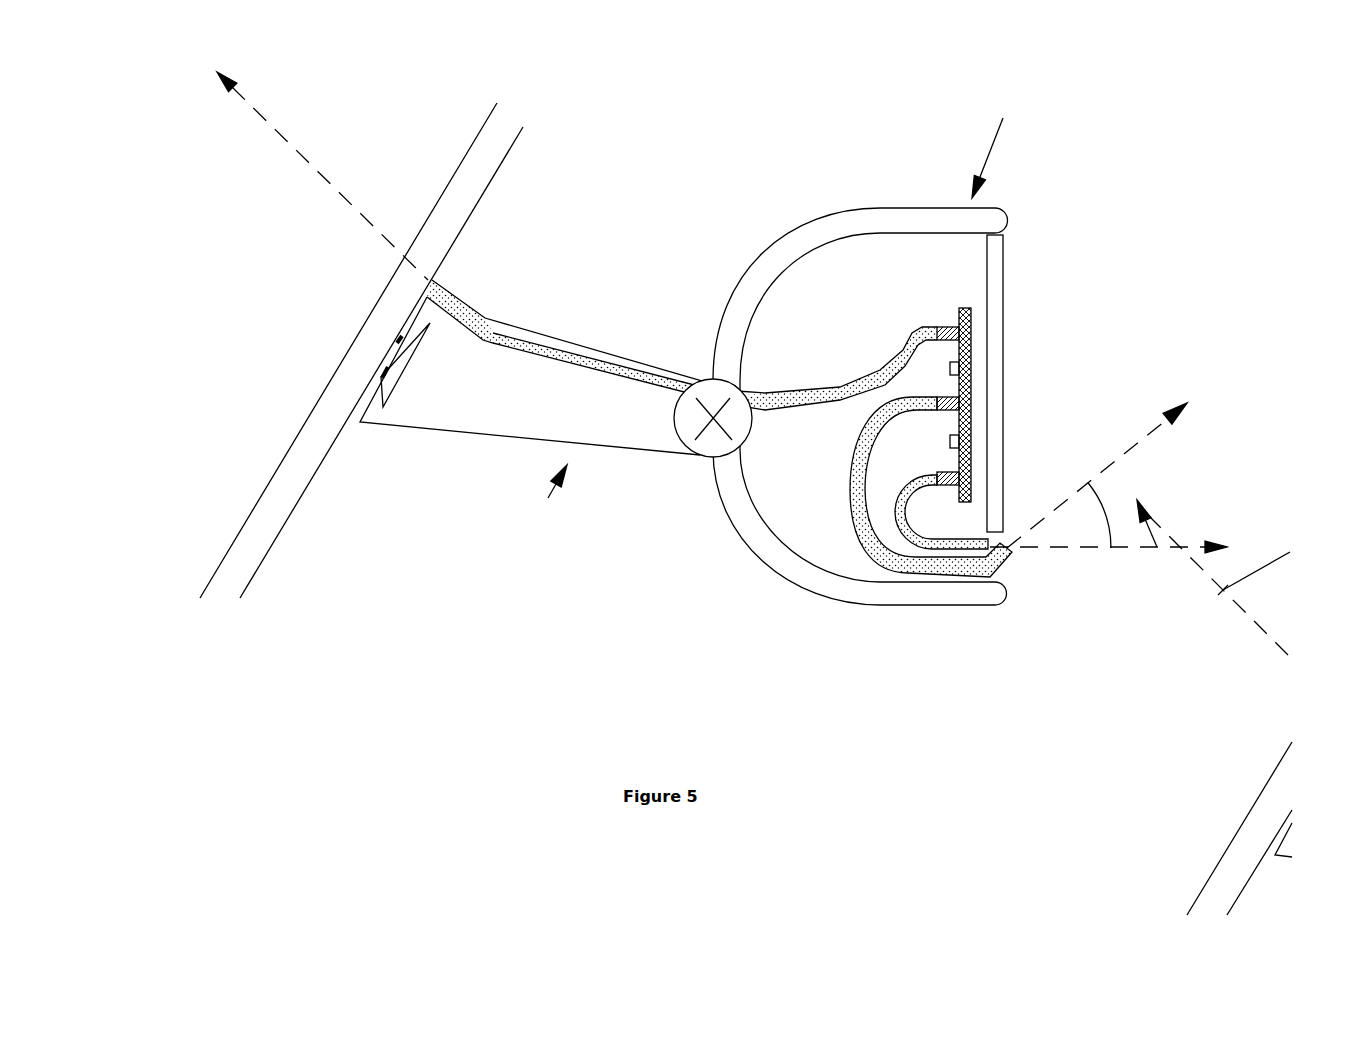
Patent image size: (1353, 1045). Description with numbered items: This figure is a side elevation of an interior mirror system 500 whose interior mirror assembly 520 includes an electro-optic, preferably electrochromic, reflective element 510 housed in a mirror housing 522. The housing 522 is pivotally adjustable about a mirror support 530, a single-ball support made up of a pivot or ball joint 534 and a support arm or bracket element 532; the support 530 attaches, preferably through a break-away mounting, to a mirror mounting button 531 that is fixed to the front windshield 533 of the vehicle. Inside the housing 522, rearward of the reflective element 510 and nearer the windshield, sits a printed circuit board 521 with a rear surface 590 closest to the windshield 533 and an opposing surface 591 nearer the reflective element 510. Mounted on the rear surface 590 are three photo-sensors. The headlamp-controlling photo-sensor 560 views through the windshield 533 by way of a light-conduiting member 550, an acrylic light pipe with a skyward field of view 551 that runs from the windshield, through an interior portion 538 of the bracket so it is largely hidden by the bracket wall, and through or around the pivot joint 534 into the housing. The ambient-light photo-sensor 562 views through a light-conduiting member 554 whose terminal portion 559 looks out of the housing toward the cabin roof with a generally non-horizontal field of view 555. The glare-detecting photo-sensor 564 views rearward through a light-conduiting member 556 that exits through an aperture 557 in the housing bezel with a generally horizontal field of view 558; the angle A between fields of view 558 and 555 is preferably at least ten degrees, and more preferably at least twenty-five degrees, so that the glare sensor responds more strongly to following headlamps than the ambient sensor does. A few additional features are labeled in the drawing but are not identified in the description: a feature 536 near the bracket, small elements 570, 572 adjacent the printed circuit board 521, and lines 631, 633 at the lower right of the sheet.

The interior mirror system 500 is at (372, 655).
The electro-optic reflective element 510 is at (995, 282).
The interior mirror assembly 520 is at (998, 146).
The printed circuit board 521 is at (970, 392).
The mirror housing 522 is at (825, 217).
The mirror support 530 is at (547, 496).
The mirror mounting button 531 is at (407, 352).
The support arm or bracket element 532 is at (610, 425).
The front windshield 533 is at (328, 417).
The pivot or ball joint 534 is at (715, 438).
The bracket base 536 is at (518, 440).
The interior portion of bracket 538 is at (422, 402).
The light-conduiting member 550 is at (620, 367).
The skyward field of view 551 is at (302, 160).
The light-conduiting member 554 is at (868, 525).
The field of view 555 is at (1114, 474).
The light-conduiting member 556 is at (920, 543).
The aperture 557 is at (990, 537).
The field of view 558 is at (1140, 567).
The terminal portion 559 is at (1010, 558).
The photo-sensor 560 is at (943, 325).
The photo-sensor 562 is at (952, 403).
The photo-sensor 564 is at (950, 485).
The first clip 570 is at (950, 368).
The second clip 572 is at (950, 443).
The rear surface 590 is at (957, 312).
The opposing surface 591 is at (968, 337).
The window outer surface 631 is at (1292, 772).
The window inner surface 633 is at (1243, 850).